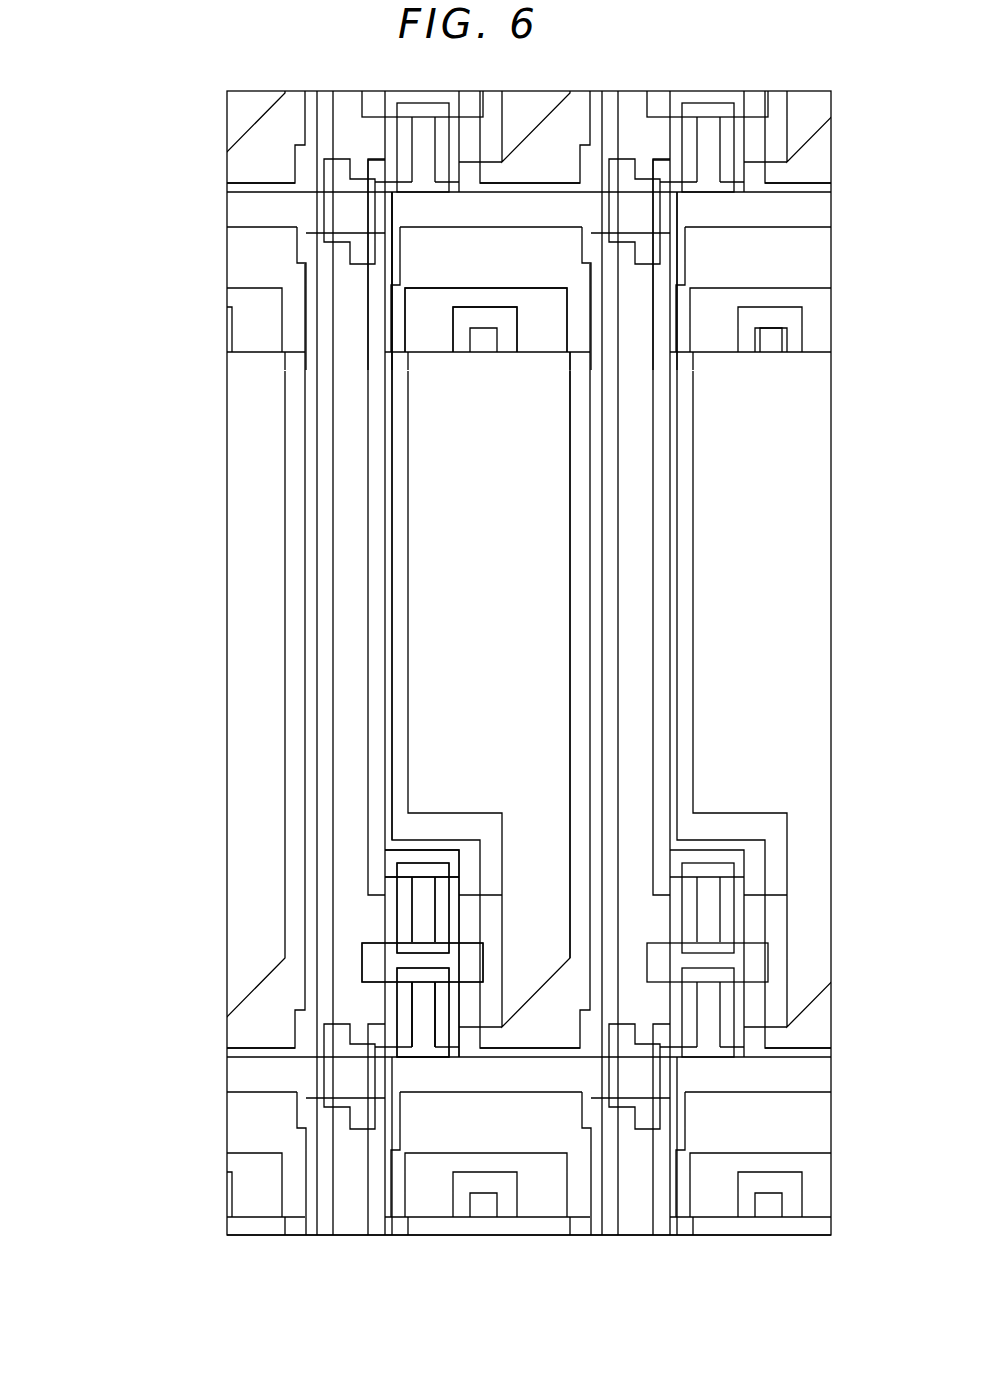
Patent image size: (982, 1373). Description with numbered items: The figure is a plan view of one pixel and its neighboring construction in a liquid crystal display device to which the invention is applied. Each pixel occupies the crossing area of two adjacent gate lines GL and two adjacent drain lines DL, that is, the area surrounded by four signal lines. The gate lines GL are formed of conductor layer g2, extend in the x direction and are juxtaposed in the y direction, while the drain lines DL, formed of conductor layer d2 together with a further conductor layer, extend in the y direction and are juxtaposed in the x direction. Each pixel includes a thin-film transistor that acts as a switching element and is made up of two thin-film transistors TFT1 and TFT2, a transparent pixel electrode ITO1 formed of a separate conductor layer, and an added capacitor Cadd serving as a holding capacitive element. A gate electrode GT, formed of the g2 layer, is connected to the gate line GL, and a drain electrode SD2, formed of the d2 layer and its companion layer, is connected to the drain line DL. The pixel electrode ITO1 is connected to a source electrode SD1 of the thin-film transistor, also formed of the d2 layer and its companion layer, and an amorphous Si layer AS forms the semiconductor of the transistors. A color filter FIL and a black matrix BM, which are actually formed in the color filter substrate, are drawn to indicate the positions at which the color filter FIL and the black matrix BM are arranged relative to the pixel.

The gate line GL is at (357, 232).
The conductor layer g2 is at (787, 333).
The conductor layer d2 is at (457, 334).
The added capacitor Cadd is at (553, 279).
The transparent pixel electrode ITO1 is at (392, 565).
The drain line DL is at (333, 657).
The black matrix BM is at (570, 648).
The first thin-film transistor TFT1 is at (477, 868).
The second thin-film transistor TFT2 is at (477, 1013).
The gate electrode GT is at (427, 848).
The amorphous Si layer AS is at (342, 1027).
The drain electrode SD2 is at (435, 1028).
The source electrode SD1 is at (413, 1006).
The color filter FIL is at (376, 1226).